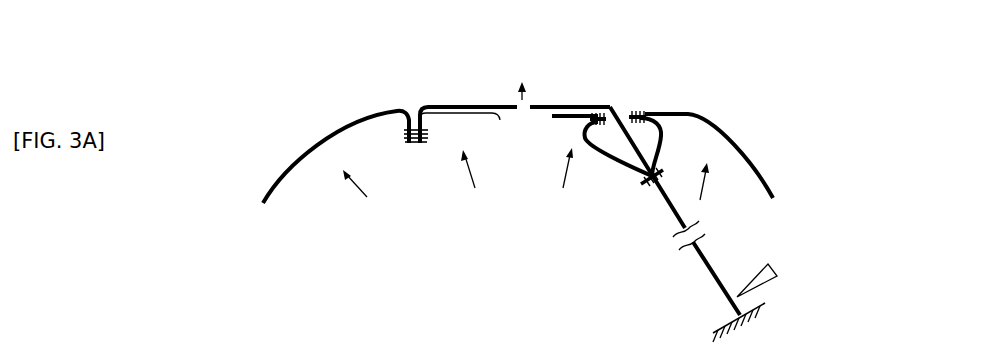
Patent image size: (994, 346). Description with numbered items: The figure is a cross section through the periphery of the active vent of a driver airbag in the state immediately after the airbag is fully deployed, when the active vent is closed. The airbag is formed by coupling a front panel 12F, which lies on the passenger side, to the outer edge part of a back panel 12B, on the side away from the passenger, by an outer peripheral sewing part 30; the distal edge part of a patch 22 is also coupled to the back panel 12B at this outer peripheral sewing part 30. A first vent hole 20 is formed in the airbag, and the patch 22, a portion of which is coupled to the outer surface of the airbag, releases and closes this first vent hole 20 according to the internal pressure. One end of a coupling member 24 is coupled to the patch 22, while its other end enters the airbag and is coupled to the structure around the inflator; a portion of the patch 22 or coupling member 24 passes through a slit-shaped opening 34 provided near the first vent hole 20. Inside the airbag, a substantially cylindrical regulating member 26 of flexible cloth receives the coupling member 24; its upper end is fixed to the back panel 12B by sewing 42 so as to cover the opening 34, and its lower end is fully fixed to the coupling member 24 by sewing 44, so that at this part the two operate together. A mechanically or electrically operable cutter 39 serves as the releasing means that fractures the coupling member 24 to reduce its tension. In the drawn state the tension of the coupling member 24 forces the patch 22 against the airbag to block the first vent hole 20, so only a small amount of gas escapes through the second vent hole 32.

The front panel 12F is at (291, 158).
The back panel 12B is at (750, 157).
The first vent hole 20 is at (500, 120).
The patch 22 is at (565, 107).
The coupling member 24 is at (708, 258).
The regulating member 26 is at (613, 158).
The outer peripheral sewing part 30 is at (427, 142).
The second vent hole 32 is at (523, 100).
The opening 34 is at (623, 107).
The cutter 39 is at (773, 270).
The sewing 42 is at (640, 109).
The sewing 44 is at (647, 184).